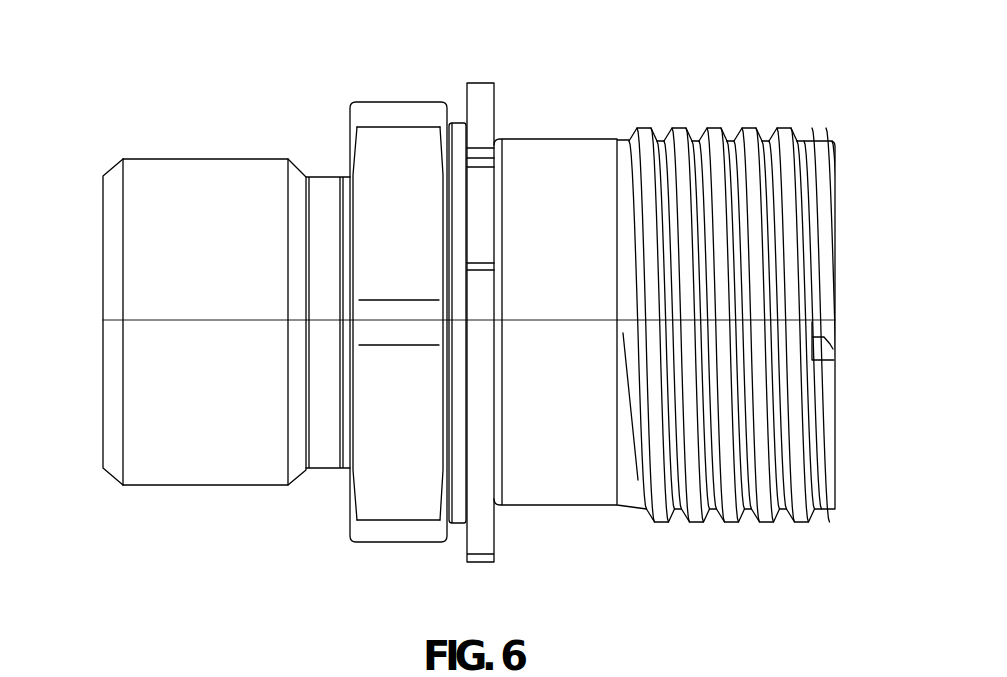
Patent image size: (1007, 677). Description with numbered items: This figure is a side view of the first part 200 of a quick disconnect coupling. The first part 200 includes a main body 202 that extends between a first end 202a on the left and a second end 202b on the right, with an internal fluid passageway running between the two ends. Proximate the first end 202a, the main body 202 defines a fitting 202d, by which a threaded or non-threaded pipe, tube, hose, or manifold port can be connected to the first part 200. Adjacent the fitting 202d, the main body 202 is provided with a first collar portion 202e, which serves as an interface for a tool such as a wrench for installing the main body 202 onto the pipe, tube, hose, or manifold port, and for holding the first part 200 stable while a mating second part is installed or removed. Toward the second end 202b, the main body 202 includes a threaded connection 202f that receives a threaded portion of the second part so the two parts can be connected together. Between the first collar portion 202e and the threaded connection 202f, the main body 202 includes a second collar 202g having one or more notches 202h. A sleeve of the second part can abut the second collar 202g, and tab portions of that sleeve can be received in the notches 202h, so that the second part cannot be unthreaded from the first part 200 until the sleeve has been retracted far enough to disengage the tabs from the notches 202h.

The first part 200 is at (148, 97).
The main body 202 is at (560, 498).
The first end 202a is at (103, 450).
The second end 202b is at (325, 182).
The fitting 202d is at (215, 460).
The first collar portion 202e is at (386, 492).
The threaded connection 202f is at (742, 523).
The second collar 202g is at (483, 93).
The notches 202h is at (483, 198).